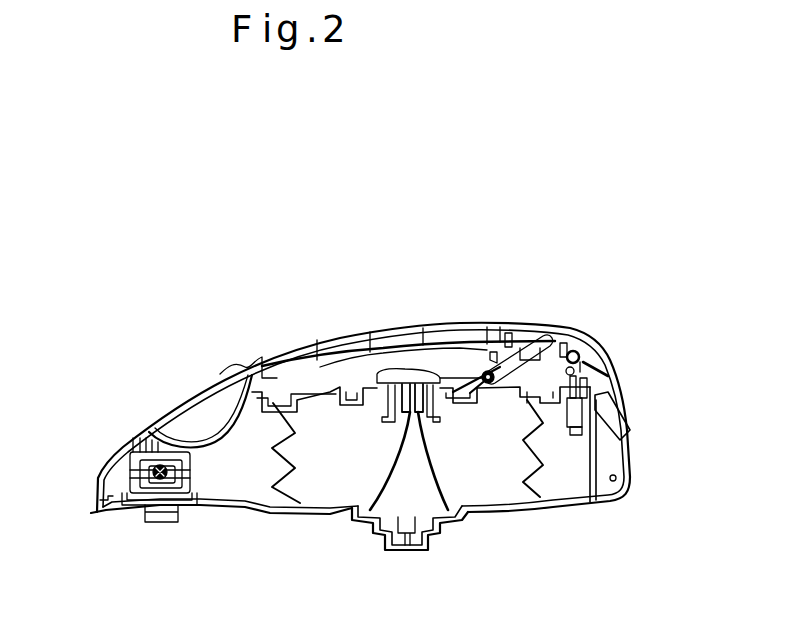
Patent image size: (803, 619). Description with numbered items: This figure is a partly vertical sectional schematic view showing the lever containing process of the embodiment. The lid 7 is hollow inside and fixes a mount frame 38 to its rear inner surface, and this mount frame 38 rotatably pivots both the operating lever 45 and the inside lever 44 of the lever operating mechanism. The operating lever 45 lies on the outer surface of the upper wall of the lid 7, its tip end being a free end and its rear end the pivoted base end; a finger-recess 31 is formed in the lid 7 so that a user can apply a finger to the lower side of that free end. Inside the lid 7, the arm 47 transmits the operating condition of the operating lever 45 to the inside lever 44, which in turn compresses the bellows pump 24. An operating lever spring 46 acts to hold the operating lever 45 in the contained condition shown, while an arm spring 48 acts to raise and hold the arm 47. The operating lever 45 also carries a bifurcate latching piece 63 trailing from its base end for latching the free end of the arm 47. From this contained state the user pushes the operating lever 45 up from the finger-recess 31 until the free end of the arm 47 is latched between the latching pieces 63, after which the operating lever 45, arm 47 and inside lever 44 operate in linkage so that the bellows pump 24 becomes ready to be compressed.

The lid 7 is at (98, 458).
The finger-recess 31 is at (163, 387).
The operating lever 45 is at (387, 318).
The arm spring 48 is at (408, 320).
The latching piece 63 is at (468, 291).
The arm 47 is at (531, 313).
The operating lever spring 46 is at (615, 334).
The mount frame 38 is at (631, 415).
The bellows pump 24 is at (380, 501).
The inside lever 44 is at (377, 477).